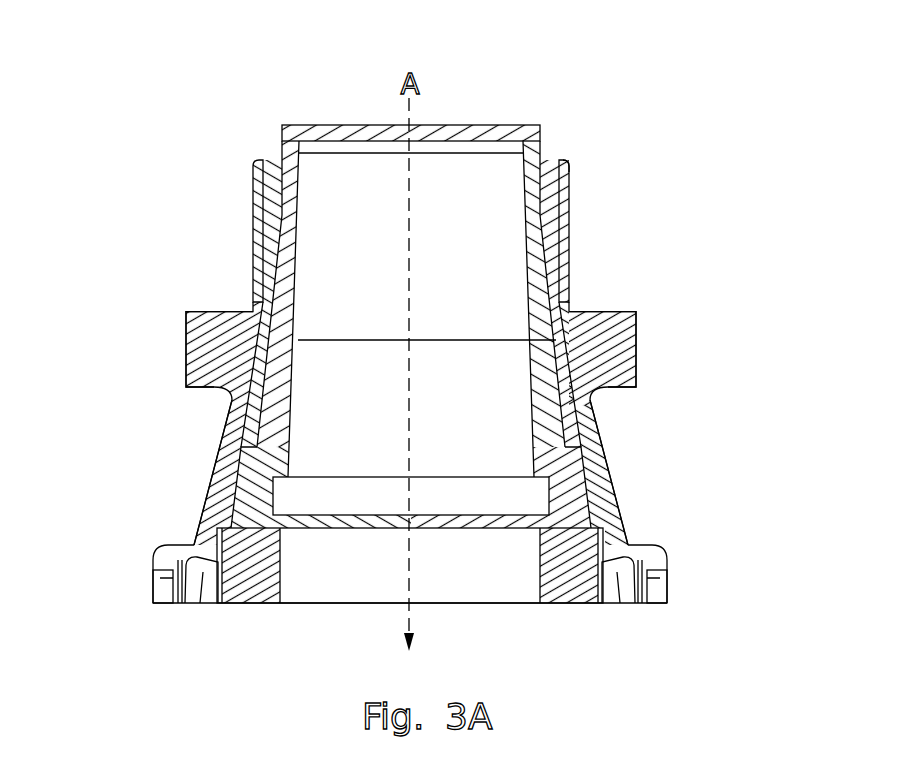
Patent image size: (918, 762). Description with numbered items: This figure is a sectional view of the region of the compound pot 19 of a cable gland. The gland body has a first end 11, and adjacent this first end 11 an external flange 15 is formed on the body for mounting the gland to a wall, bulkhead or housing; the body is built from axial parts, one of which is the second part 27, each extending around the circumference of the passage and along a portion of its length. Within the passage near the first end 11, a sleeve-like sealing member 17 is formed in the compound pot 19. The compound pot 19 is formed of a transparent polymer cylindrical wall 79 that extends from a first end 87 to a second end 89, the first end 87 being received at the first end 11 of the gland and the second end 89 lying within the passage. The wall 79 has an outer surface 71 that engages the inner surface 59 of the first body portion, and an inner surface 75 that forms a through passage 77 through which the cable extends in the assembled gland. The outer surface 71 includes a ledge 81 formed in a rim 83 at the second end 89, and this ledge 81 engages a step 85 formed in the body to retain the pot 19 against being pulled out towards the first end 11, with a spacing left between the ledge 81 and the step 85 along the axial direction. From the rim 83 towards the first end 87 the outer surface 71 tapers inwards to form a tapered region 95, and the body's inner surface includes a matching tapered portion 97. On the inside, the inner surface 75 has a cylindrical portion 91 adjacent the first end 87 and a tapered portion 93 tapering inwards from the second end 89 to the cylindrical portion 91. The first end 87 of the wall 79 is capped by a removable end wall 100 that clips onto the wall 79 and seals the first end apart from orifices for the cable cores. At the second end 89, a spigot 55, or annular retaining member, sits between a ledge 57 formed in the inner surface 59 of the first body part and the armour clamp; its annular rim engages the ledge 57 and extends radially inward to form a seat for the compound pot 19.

The first end 11 is at (568, 170).
The external flange 15 is at (186, 320).
The sealing member 17 is at (232, 215).
The compound pot 19 is at (636, 338).
The second part 27 is at (228, 413).
The spigot 55 is at (200, 532).
The ledge 57 is at (607, 520).
The inner surface 59 is at (580, 425).
The outer surface 71 is at (265, 345).
The inner surface 75 is at (523, 299).
The through passage 77 is at (378, 337).
The cylindrical wall 79 is at (568, 171).
The ledge 81 is at (566, 443).
The rim 83 is at (602, 605).
The step 85 is at (250, 447).
The first end 87 is at (303, 205).
The second end 89 is at (310, 528).
The cylindrical portion 91 is at (262, 166).
The tapered portion 93 is at (532, 396).
The tapered region 95 is at (262, 370).
The tapered portion 97 is at (267, 300).
The end wall 100 is at (500, 126).